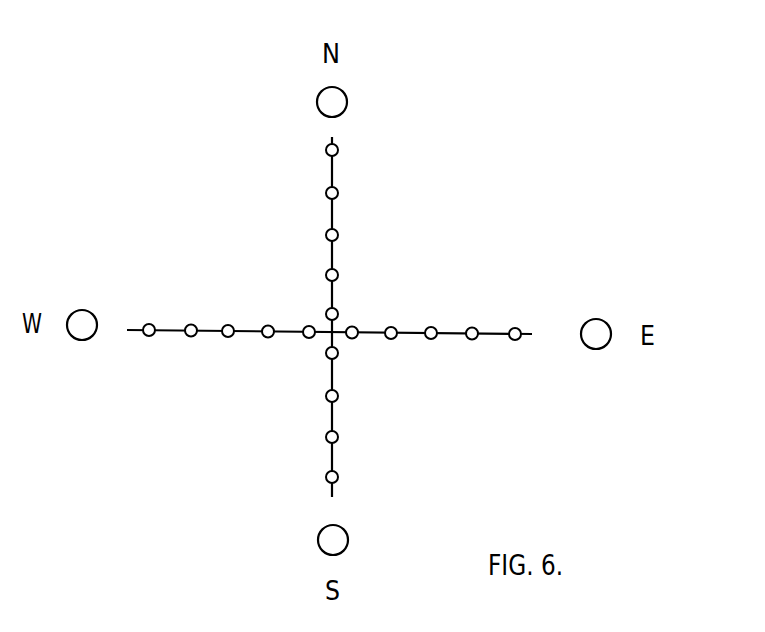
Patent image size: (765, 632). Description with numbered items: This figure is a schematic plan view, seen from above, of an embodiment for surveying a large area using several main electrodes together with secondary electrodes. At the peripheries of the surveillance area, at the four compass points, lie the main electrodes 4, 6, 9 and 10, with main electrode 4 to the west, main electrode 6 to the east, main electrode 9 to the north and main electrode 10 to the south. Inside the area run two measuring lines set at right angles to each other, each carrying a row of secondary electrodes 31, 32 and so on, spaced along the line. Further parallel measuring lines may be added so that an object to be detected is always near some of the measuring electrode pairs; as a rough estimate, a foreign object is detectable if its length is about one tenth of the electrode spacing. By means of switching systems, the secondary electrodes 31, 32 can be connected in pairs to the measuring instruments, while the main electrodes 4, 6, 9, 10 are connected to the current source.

The main electrode 4 is at (89, 338).
The main electrode 6 is at (608, 324).
The main electrode 9 is at (345, 96).
The main electrode 10 is at (346, 533).
The secondary electrode 31 is at (338, 149).
The secondary electrode 32 is at (338, 192).